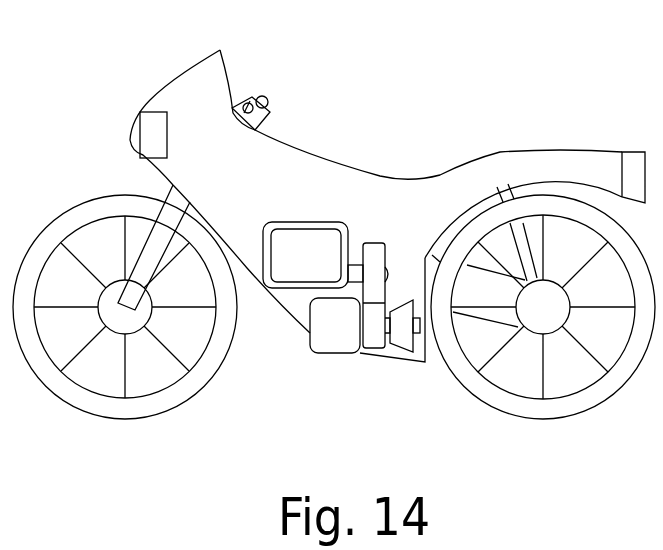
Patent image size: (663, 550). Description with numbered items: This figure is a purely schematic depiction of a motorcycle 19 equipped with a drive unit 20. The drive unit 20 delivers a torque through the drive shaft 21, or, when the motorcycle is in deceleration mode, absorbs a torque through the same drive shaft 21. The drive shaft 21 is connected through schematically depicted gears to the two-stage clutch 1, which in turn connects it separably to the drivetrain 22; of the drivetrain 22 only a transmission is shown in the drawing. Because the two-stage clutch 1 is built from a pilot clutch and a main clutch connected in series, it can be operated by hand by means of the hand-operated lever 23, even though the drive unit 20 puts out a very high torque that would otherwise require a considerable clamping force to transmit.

The motorcycle 19 is at (125, 78).
The hand-operated lever 23 is at (248, 101).
The drive unit 20 is at (312, 221).
The drive shaft 21 is at (358, 243).
The drivetrain 22 is at (332, 343).
The two-stage clutch 1 is at (404, 343).